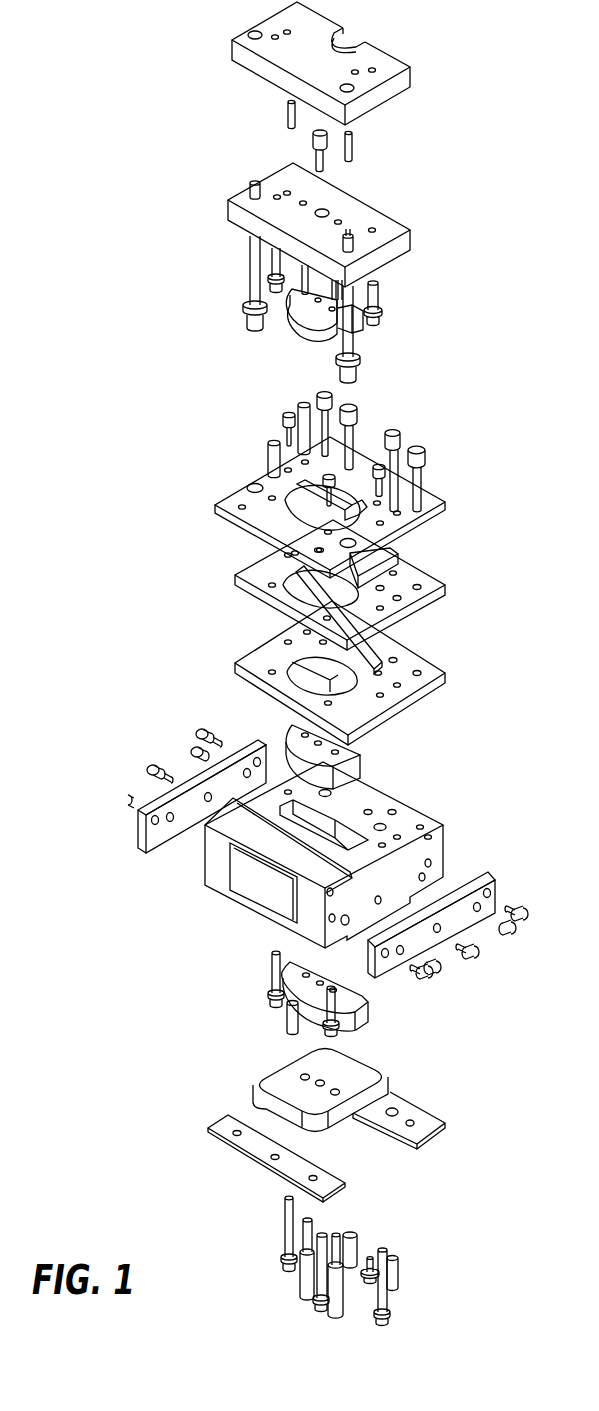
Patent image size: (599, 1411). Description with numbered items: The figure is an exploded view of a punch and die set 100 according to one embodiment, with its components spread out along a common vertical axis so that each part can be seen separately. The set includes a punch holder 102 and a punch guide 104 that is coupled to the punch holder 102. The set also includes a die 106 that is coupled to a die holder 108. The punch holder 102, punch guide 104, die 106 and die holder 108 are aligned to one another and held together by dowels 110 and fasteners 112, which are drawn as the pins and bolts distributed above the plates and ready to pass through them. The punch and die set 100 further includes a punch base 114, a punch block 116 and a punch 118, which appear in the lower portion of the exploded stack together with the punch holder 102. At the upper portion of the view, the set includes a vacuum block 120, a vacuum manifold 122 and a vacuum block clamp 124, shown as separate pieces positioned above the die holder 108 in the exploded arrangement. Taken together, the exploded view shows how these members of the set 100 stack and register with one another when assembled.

The punch and die set 100 is at (94, 88).
The punch holder 102 is at (403, 798).
The punch guide 104 is at (400, 710).
The die 106 is at (423, 615).
The die holder 108 is at (420, 532).
The dowels 110 is at (307, 407).
The fasteners 112 is at (282, 488).
The punch base 114 is at (290, 1065).
The punch block 116 is at (372, 1007).
The punch 118 is at (363, 765).
The vacuum block 120 is at (312, 333).
The vacuum manifold 122 is at (353, 193).
The vacuum block clamp 124 is at (387, 53).